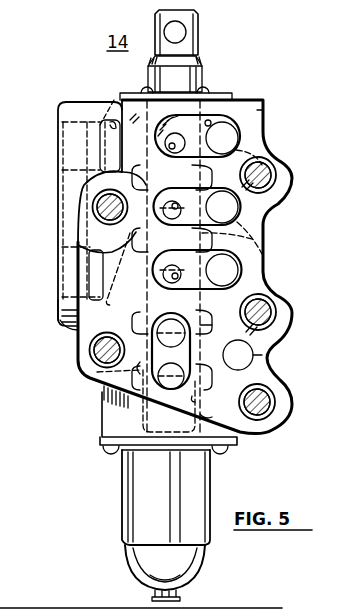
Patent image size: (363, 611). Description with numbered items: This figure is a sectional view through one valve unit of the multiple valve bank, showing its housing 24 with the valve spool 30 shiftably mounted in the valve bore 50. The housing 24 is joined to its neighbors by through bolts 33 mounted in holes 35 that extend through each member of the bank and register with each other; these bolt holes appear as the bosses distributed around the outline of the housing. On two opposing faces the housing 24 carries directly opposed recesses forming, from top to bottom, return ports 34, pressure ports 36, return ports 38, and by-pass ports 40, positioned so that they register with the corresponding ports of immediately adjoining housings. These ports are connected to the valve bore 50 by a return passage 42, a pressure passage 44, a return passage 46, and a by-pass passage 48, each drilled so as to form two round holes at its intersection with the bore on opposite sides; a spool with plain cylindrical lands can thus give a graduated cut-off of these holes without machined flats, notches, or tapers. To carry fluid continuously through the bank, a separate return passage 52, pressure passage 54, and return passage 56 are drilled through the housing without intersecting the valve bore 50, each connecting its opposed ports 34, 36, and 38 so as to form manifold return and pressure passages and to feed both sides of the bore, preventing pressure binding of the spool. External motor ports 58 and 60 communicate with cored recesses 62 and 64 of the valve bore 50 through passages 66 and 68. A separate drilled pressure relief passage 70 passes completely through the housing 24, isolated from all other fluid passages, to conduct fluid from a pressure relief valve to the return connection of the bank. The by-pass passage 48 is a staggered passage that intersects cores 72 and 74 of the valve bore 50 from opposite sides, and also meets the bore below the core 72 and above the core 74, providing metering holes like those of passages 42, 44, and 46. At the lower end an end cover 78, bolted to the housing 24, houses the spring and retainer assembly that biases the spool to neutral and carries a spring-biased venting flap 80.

The housing 24 is at (264, 108).
The valve spool 30 is at (199, 31).
The through bolt 33 is at (96, 207).
The return port 34 is at (212, 121).
The hole 35 is at (95, 212).
The pressure port 36 is at (256, 240).
The return port 38 is at (212, 330).
The by-pass port 40 is at (217, 415).
The return passage 42 is at (182, 124).
The pressure passage 44 is at (178, 198).
The return passage 46 is at (178, 260).
The by-pass passage 48 is at (176, 322).
The valve bore 50 is at (195, 402).
The return passage 52 is at (238, 138).
The pressure passage 54 is at (238, 212).
The return passage 56 is at (238, 272).
The motor port 58 is at (64, 132).
The motor port 60 is at (62, 297).
The cored recess 62 is at (270, 148).
The cored recess 64 is at (263, 254).
The passage 66 is at (114, 98).
The passage 68 is at (82, 318).
The pressure relief passage 70 is at (268, 357).
The core 72 is at (133, 310).
The core 74 is at (90, 380).
The end cover 78 is at (128, 553).
The venting flap 80 is at (181, 598).